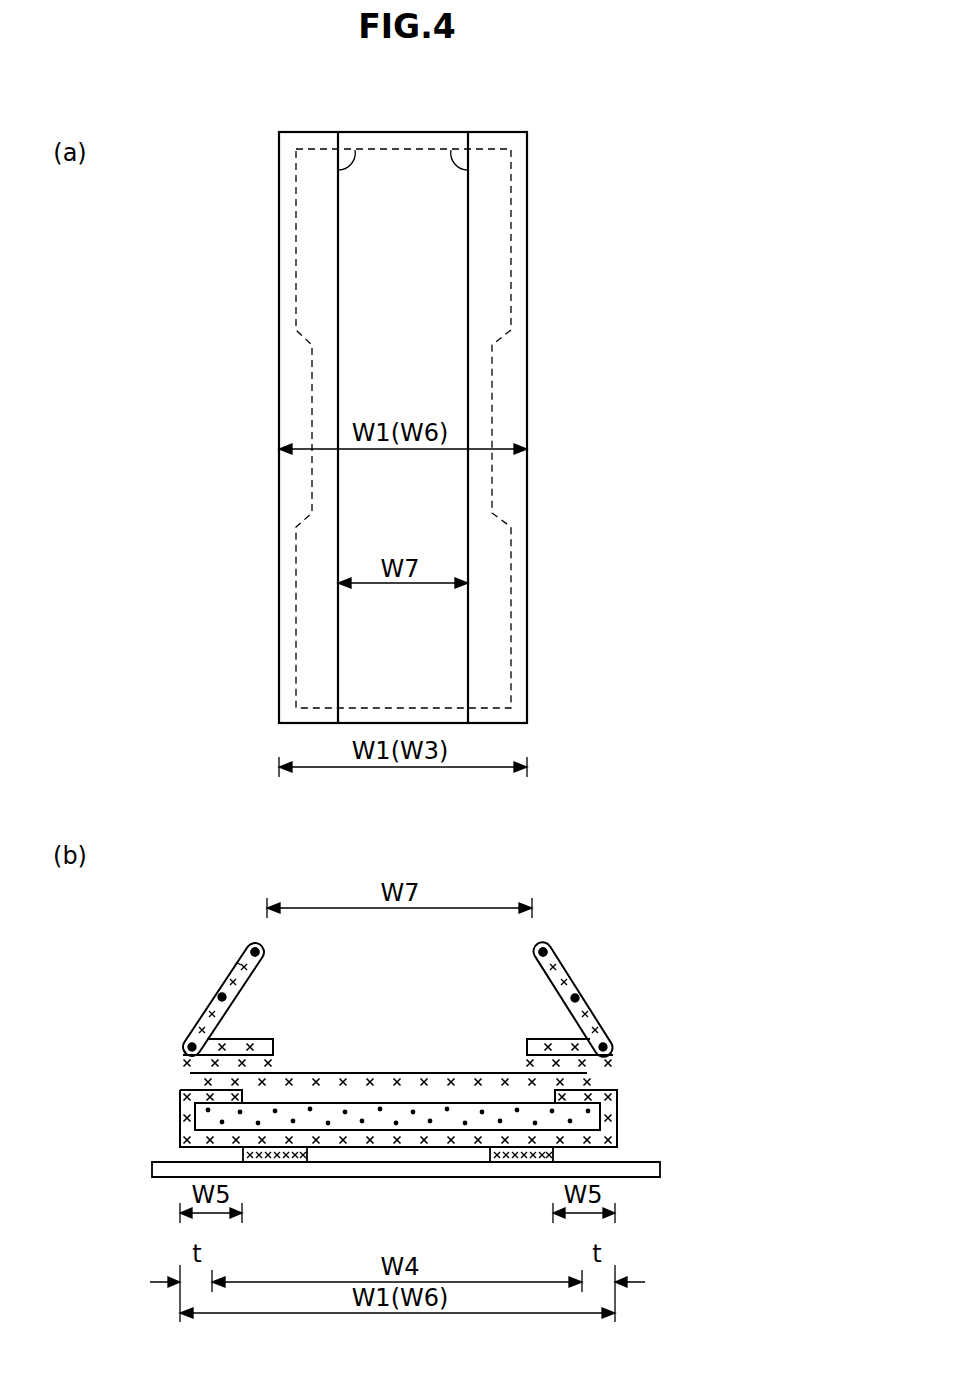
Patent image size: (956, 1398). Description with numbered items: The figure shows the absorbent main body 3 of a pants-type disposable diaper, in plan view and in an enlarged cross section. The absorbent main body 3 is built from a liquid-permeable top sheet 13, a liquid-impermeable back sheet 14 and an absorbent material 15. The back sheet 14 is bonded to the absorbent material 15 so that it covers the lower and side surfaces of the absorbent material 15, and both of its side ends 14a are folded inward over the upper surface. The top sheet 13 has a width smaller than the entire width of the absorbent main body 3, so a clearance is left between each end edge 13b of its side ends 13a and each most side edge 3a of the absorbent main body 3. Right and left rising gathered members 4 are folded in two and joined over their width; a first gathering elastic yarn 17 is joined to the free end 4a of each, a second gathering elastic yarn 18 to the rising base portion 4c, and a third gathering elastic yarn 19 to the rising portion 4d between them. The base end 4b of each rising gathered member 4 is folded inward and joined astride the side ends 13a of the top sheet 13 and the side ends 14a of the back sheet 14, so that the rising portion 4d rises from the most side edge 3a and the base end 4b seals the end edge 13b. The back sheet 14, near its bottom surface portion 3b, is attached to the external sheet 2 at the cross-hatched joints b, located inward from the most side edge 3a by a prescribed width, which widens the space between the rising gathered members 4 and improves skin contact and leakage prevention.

The external sheet 2 is at (633, 1177).
The absorbent main body 3 is at (527, 398).
The most side edge 3a is at (182, 1138).
The bottom surface portion of body 3b is at (224, 1149).
The rising gathered member 4 is at (310, 287).
The free end 4a is at (355, 150).
The base end 4b is at (266, 1038).
The rising base portion 4c is at (184, 1050).
The rising portion 4d is at (238, 964).
The top sheet 13 is at (400, 642).
The side end of top sheet 13a is at (197, 1125).
The end edge of top sheet 13b is at (207, 1073).
The back sheet 14 is at (194, 1150).
The side end of back sheet 14a is at (180, 1128).
The absorbent material 15 is at (435, 483).
The first gathering elastic yarn 17 is at (248, 949).
The second gathering elastic yarn 18 is at (192, 1041).
The third gathering elastic yarn 19 is at (216, 997).
The cross hatches b is at (290, 1162).